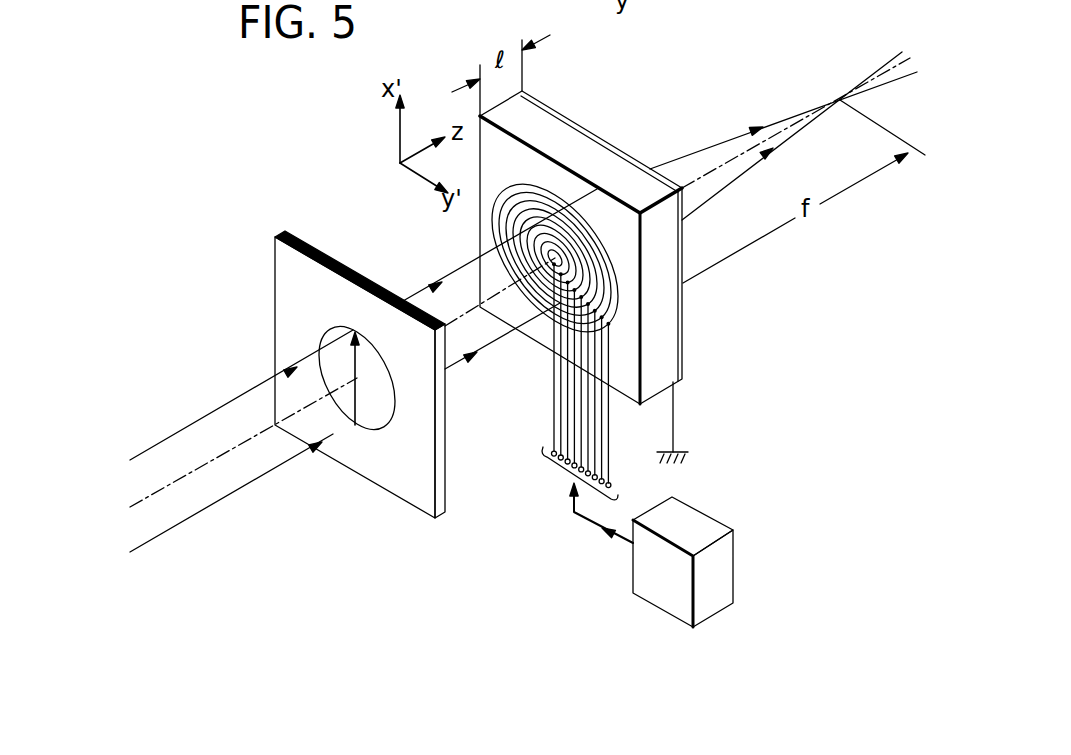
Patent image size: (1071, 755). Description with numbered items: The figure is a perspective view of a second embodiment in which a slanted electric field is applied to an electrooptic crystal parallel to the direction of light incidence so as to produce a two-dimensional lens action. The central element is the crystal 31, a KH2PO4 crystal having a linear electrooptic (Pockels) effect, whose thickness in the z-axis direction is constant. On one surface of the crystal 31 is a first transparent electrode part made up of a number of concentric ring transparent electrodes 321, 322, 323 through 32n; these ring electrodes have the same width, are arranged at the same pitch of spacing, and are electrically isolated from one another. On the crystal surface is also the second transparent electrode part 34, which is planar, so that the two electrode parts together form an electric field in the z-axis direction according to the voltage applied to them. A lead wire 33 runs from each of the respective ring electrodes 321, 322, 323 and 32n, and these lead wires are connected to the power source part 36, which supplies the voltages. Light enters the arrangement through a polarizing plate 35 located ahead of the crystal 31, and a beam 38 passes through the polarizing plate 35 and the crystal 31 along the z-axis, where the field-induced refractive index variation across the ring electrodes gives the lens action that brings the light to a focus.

The crystal 31 is at (623, 153).
The concentric ring transparent electrode 321 is at (556, 252).
The concentric ring transparent electrode 322 is at (567, 243).
The concentric ring transparent electrode 323 is at (576, 262).
The concentric ring transparent electrode 32n is at (618, 270).
The lead wire 33 is at (578, 516).
The second transparent electrode part 34 is at (586, 128).
The polarizing plate 35 is at (290, 278).
The power source part 36 is at (692, 522).
The incident light beam 38 is at (422, 290).